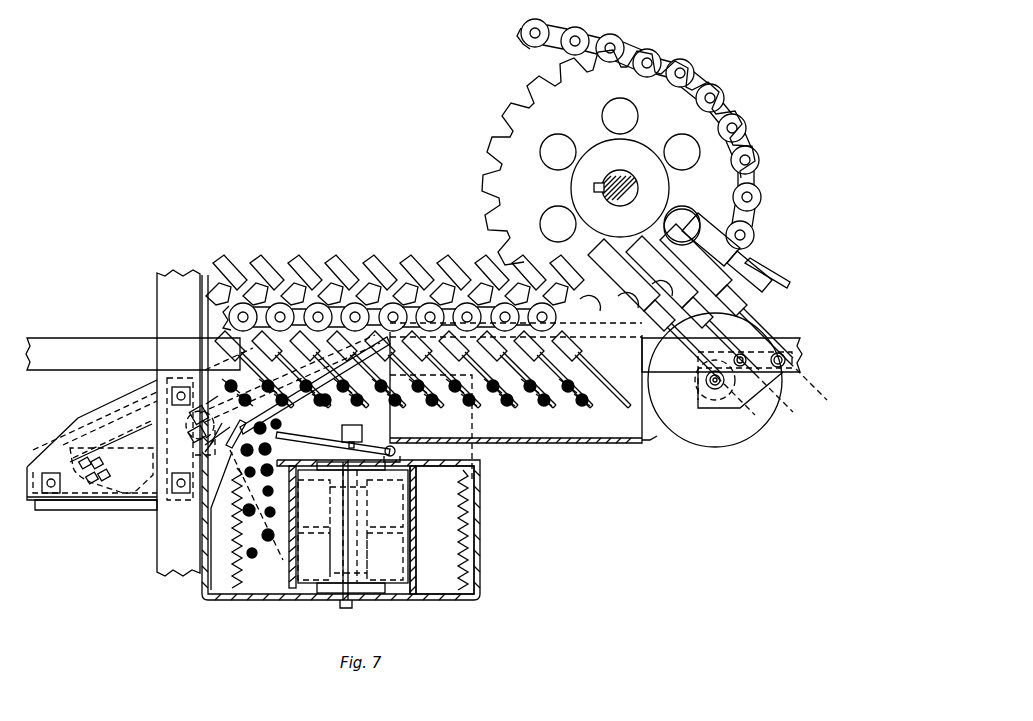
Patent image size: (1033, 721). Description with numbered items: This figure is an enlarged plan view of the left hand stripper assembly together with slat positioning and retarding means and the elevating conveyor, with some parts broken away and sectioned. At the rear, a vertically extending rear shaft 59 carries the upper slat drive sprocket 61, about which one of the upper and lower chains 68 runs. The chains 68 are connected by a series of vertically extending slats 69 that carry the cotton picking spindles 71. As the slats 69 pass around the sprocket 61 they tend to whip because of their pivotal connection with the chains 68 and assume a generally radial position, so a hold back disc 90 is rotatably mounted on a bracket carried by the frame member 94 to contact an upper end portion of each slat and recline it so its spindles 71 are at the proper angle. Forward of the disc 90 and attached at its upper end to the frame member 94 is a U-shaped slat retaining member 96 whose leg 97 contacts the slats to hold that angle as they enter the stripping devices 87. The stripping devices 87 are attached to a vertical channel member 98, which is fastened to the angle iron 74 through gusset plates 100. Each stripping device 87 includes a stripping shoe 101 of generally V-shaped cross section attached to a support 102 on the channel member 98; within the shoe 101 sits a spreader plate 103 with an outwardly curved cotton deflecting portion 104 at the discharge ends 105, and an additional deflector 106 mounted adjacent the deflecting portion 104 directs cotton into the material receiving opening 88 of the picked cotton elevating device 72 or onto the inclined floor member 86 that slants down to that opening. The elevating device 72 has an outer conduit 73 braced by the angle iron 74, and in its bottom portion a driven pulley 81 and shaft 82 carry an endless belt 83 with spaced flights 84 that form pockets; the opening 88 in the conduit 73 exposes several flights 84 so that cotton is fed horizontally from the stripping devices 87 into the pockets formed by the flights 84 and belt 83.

The rear shaft 59 is at (625, 178).
The upper slat drive sprocket 61 is at (484, 153).
The chains 68 is at (528, 48).
The slats 69 is at (752, 272).
The cotton picking spindles 71 is at (566, 392).
The picked cotton elevating device 72 is at (446, 504).
The conduit 73 is at (462, 592).
The angle iron 74 is at (157, 570).
The driven pulley 81 is at (398, 594).
The shaft 82 is at (346, 600).
The endless belt 83 is at (422, 562).
The flights 84 is at (262, 585).
The inclined floor member 86 is at (206, 458).
The stripping devices 87 is at (280, 390).
The material receiving opening 88 is at (226, 490).
The hold back disc 90 is at (752, 426).
The frame member 94 is at (66, 340).
The U-shaped slat retaining member 96 is at (606, 470).
The leg 97 is at (655, 443).
The vertical channel member 98 is at (113, 487).
The gusset plates 100 is at (60, 445).
The stripping shoe 101 is at (333, 400).
The support 102 is at (106, 405).
The spreader plate 103 is at (290, 395).
The cotton deflecting portion 104 is at (228, 425).
The discharge ends 105 is at (285, 432).
The deflector 106 is at (197, 440).